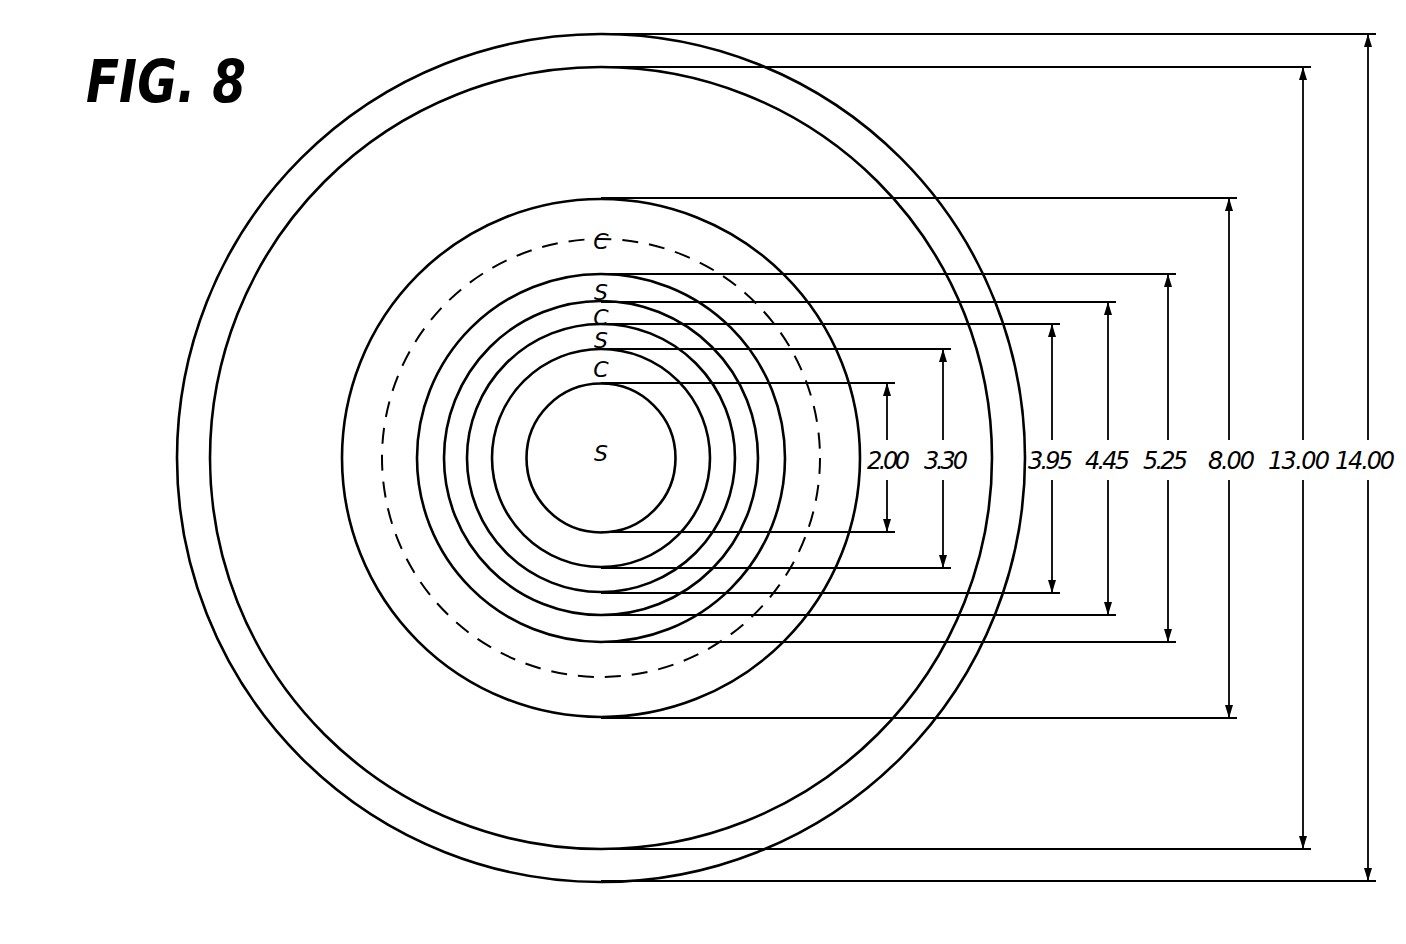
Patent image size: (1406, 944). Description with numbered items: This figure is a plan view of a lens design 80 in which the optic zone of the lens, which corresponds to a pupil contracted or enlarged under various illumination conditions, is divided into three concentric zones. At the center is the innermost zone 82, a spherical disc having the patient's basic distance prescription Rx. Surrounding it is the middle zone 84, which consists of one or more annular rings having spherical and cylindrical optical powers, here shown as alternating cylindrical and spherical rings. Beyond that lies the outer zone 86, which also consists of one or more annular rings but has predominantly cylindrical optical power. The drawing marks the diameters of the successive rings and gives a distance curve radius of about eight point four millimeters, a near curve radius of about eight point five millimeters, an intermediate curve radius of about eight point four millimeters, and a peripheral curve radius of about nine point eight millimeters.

The lens design 80 is at (262, 322).
The innermost zone 82 is at (614, 507).
The middle zone 84 is at (527, 445).
The outer zone 86 is at (613, 694).